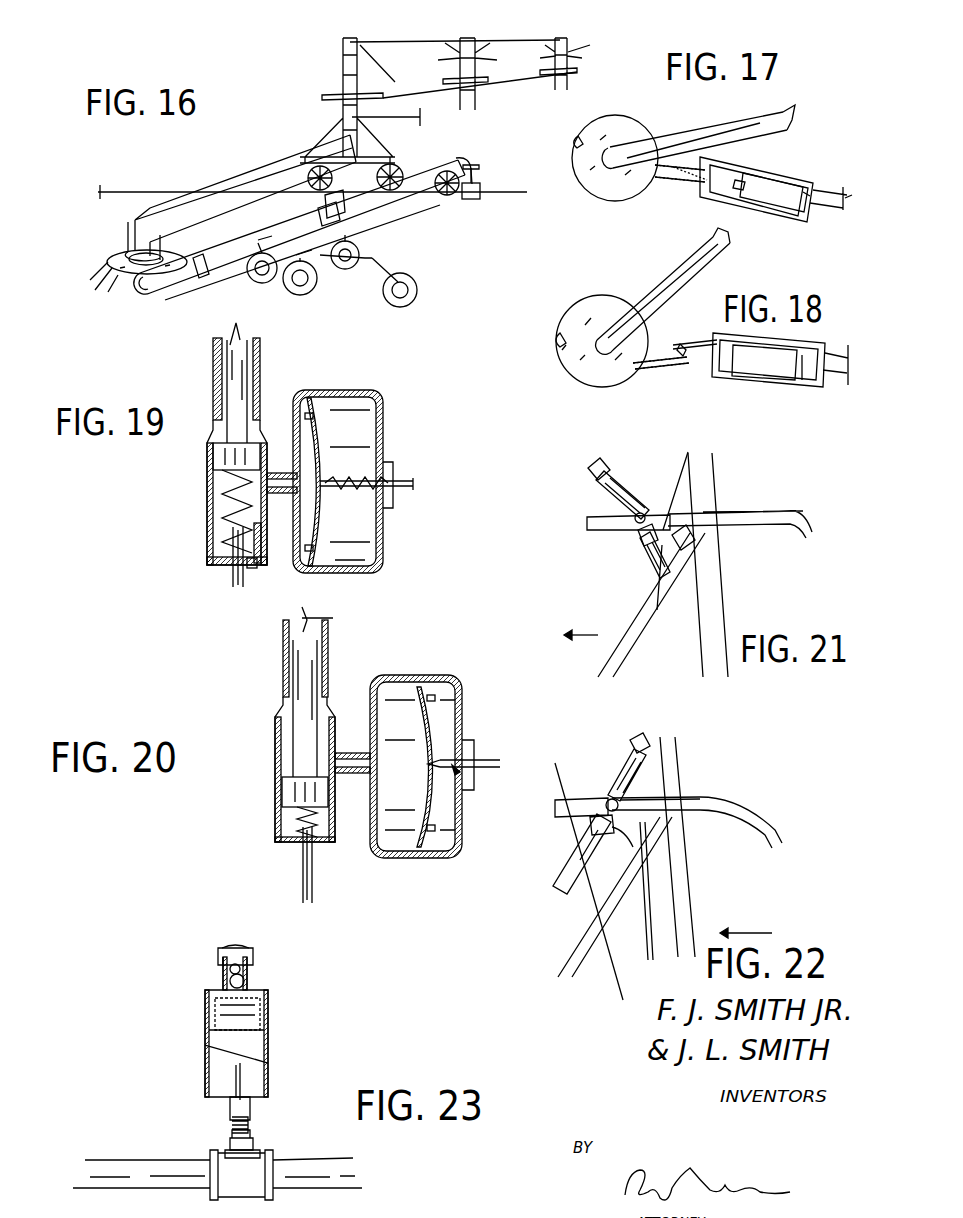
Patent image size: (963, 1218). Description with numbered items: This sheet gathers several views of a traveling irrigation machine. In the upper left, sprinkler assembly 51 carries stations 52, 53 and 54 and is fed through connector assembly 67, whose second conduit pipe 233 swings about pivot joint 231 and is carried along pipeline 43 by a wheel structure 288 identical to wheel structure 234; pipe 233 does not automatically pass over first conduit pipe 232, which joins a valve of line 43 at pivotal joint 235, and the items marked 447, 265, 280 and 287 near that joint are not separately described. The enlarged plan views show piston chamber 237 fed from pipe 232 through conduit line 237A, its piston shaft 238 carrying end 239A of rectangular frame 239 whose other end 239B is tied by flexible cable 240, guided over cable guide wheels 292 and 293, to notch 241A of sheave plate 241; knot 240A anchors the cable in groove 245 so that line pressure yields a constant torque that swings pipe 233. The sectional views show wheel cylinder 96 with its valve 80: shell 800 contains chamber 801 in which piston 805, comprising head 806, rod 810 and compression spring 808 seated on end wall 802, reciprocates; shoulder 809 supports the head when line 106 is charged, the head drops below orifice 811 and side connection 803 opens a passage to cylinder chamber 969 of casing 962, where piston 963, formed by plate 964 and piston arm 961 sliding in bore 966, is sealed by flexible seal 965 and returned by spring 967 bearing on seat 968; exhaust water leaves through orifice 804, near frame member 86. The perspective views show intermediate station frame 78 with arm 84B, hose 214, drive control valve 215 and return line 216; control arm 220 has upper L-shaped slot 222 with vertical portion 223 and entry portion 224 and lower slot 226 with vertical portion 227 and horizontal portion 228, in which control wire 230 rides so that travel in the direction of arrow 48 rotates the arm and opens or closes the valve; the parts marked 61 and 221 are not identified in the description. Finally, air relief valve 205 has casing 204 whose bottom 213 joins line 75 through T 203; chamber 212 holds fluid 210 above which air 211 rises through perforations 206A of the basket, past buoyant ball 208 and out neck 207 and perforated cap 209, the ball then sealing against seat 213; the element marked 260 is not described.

In FIG. 16, the pipeline 43 is at (112, 178).
In FIG. 16, the hose line 447 is at (536, 180).
In FIG. 16, the sprinkler assembly 51 is at (314, 93).
In FIG. 16, the station 52 is at (336, 60).
In FIG. 16, the station 53 is at (452, 61).
In FIG. 22, the station 53 is at (702, 770).
In FIG. 16, the station 54 is at (552, 45).
In FIG. 16, the connector assembly 67 is at (176, 196).
In FIG. 16, the pivot joint 231 is at (108, 223).
In FIG. 16, the second conduit pipe 233 is at (263, 185).
In FIG. 17, the second conduit pipe 233 is at (771, 111).
In FIG. 18, the second conduit pipe 233 is at (663, 291).
In FIG. 16, the wheel structure 234 is at (378, 262).
In FIG. 16, the pivotal joint 235 is at (468, 156).
In FIG. 16, the rectangular frame 239 is at (240, 245).
In FIG. 17, the rectangular frame 239 is at (793, 220).
In FIG. 16, the flexible cable 240 is at (198, 250).
In FIG. 17, the flexible cable 240 is at (577, 134).
In FIG. 18, the flexible cable 240 is at (690, 352).
In FIG. 16, the knot 240A is at (108, 270).
In FIG. 18, the knot 240A is at (558, 333).
In FIG. 16, the sheave plate 241 is at (137, 292).
In FIG. 17, the sheave plate 241 is at (643, 128).
In FIG. 18, the sheave plate 241 is at (617, 377).
In FIG. 18, the radial notch 241A is at (560, 352).
In FIG. 16, the groove 245 is at (106, 260).
In FIG. 16, the valve 265 is at (477, 200).
In FIG. 16, the strut 280 is at (365, 250).
In FIG. 16, the clamp 287 is at (203, 276).
In FIG. 16, the wheel structure 288 is at (372, 208).
In FIG. 17, the first conduit pipe 232 is at (825, 210).
In FIG. 17, the piston chamber 237 is at (782, 187).
In FIG. 18, the piston chamber 237 is at (767, 363).
In FIG. 17, the fluid conduit line 237A is at (740, 180).
In FIG. 18, the fluid conduit line 237A is at (710, 378).
In FIG. 18, the piston shaft 238 is at (807, 368).
In FIG. 17, the frame end 239A is at (810, 188).
In FIG. 17, the frame end 239B is at (707, 197).
In FIG. 18, the front cable guide wheel 292 is at (683, 343).
In FIG. 18, the rear cable guide wheel 293 is at (687, 365).
In FIG. 19, the wheel piston valve subassembly 80 is at (140, 608).
In FIG. 20, the wheel piston valve subassembly 80 is at (337, 718).
In FIG. 19, the frame member 86 is at (447, 503).
In FIG. 20, the wheel cylinder 96 is at (445, 662).
In FIG. 19, the line 106 is at (212, 386).
In FIG. 20, the line 106 is at (285, 682).
In FIG. 19, the cylindrical shell 800 is at (212, 481).
In FIG. 20, the cylindrical shell 800 is at (280, 745).
In FIG. 19, the longitudinal chamber 801 is at (227, 503).
In FIG. 20, the longitudinal chamber 801 is at (297, 728).
In FIG. 19, the lower end wall 802 is at (210, 561).
In FIG. 19, the side connection 803 is at (278, 478).
In FIG. 19, the orifice 804 is at (233, 566).
In FIG. 19, the piston 805 is at (227, 456).
In FIG. 20, the piston 805 is at (227, 763).
In FIG. 20, the piston head 806 is at (293, 792).
In FIG. 19, the compression spring 808 is at (225, 536).
In FIG. 19, the shoulder 809 is at (262, 528).
In FIG. 19, the piston arm 810 is at (240, 584).
In FIG. 20, the piston arm 810 is at (303, 848).
In FIG. 20, the orifice 811 is at (313, 757).
In FIG. 19, the piston arm 961 is at (407, 477).
In FIG. 20, the piston arm 961 is at (485, 758).
In FIG. 19, the cylindrical casing 962 is at (340, 397).
In FIG. 20, the movable piston 963 is at (503, 737).
In FIG. 19, the piston plate 964 is at (316, 448).
In FIG. 20, the piston plate 964 is at (437, 723).
In FIG. 19, the piston seal 965 is at (326, 397).
In FIG. 20, the piston seal 965 is at (427, 848).
In FIG. 19, the cylindrical bore 966 is at (397, 488).
In FIG. 19, the compression spring 967 is at (368, 494).
In FIG. 20, the seat 968 is at (458, 785).
In FIG. 19, the cylinder chamber 969 is at (363, 427).
In FIG. 20, the cylinder chamber 969 is at (420, 765).
In FIG. 21, the arrow 48 is at (581, 646).
In FIG. 22, the arrow 48 is at (746, 924).
In FIG. 21, the post 61 is at (715, 602).
In FIG. 22, the station frame 78 is at (683, 900).
In FIG. 21, the horizontal arm 84B is at (783, 503).
In FIG. 22, the horizontal arm 84B is at (730, 797).
In FIG. 21, the power hose 214 is at (718, 517).
In FIG. 22, the power hose 214 is at (777, 843).
In FIG. 21, the wheel drive control valve 215 is at (643, 513).
In FIG. 21, the power return line 216 is at (672, 678).
In FIG. 22, the power return line 216 is at (645, 933).
In FIG. 21, the control arm 220 is at (515, 467).
In FIG. 21, the lever arm 221 is at (630, 531).
In FIG. 22, the lever arm 221 is at (594, 822).
In FIG. 21, the upper L-shaped slot 222 is at (558, 462).
In FIG. 22, the upper L-shaped slot 222 is at (620, 747).
In FIG. 21, the vertical slot portion 223 is at (617, 500).
In FIG. 21, the horizontal entry portion 224 is at (595, 470).
In FIG. 21, the lower L-shaped slot 226 is at (600, 553).
In FIG. 21, the vertical slot portion 227 is at (657, 570).
In FIG. 21, the horizontal slot portion 228 is at (646, 541).
In FIG. 21, the control wire 230 is at (683, 519).
In FIG. 22, the control wire 230 is at (584, 750).
In FIG. 23, the line 75 is at (138, 1160).
In FIG. 23, the T 203 is at (227, 1167).
In FIG. 23, the cylindrical casing 204 is at (223, 1075).
In FIG. 23, the air relief valve 205 is at (167, 952).
In FIG. 23, the perforation 206A is at (262, 1002).
In FIG. 23, the neck 207 is at (230, 970).
In FIG. 23, the buoyant ball 208 is at (245, 980).
In FIG. 23, the perforated cap 209 is at (223, 957).
In FIG. 23, the fluid 210 is at (270, 1047).
In FIG. 23, the air 211 is at (253, 950).
In FIG. 23, the cylindrical chamber 212 is at (233, 1052).
In FIG. 23, the bottom and seat 213 is at (243, 977).
In FIG. 23, the piston 260 is at (258, 1028).